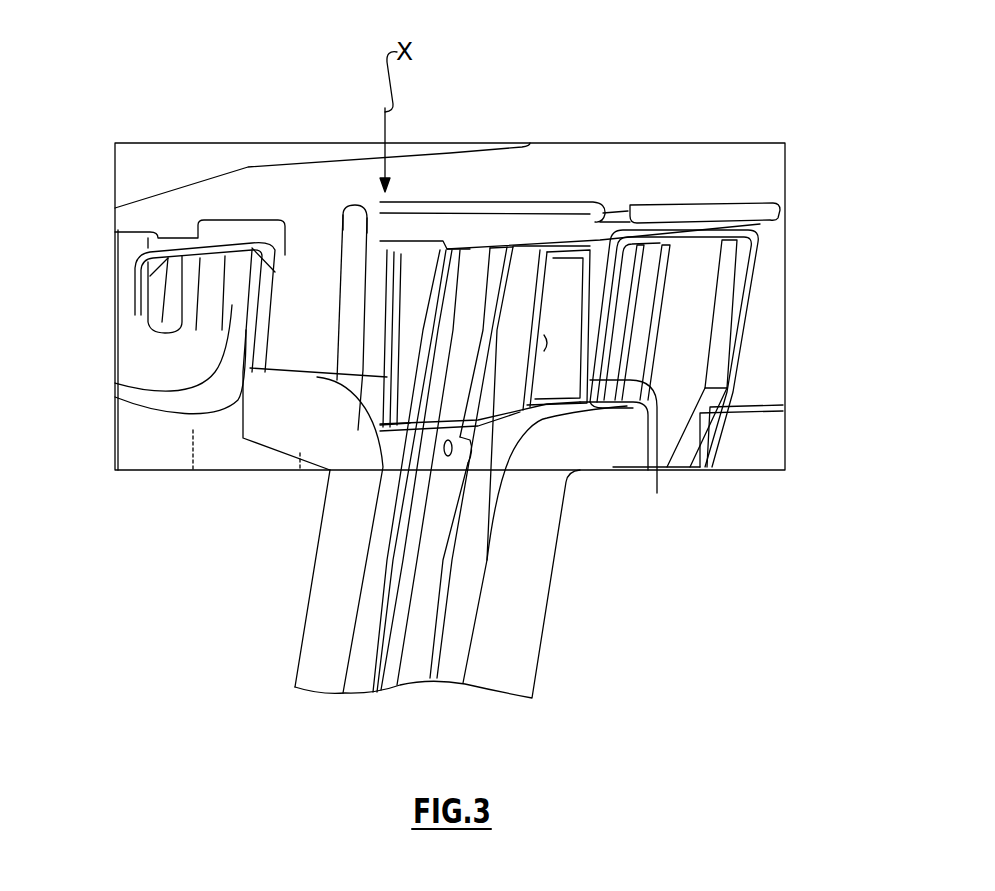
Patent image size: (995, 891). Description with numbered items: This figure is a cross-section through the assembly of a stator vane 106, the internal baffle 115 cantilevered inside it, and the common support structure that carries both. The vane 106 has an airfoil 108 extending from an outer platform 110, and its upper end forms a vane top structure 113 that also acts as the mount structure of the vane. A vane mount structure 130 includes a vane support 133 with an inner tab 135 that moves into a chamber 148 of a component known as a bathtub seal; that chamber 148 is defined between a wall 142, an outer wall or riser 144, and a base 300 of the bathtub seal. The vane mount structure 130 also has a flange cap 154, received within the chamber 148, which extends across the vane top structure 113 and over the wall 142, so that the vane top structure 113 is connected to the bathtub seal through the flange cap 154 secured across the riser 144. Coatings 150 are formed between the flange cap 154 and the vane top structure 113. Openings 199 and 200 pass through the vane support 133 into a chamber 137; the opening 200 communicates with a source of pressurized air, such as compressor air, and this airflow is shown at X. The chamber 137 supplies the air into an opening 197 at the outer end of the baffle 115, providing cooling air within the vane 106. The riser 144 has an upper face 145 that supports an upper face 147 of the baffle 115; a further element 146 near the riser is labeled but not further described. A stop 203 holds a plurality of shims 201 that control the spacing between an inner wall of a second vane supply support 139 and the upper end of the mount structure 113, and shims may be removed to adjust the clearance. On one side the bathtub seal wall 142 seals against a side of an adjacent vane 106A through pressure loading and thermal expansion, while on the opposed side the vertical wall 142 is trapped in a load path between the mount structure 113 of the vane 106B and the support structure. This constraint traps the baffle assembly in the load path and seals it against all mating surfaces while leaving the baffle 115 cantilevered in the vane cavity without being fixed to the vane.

The stator vane 106 is at (325, 430).
The adjacent vane 106A is at (608, 443).
The vane 106B is at (147, 368).
The airfoil 108 is at (340, 585).
The outer platform 110 is at (310, 425).
The vane top structure 113 is at (700, 246).
The baffle 115 is at (445, 510).
The vane mount structure 130 is at (370, 125).
The vane support 133 is at (303, 163).
The inner tab 135 is at (298, 295).
The chamber 137 is at (387, 260).
The second vane supply support 139 is at (703, 160).
The wall 142 is at (295, 295).
The riser 144 is at (450, 280).
The upper face 145 is at (385, 284).
The rail 146 is at (410, 280).
The upper face 147 is at (537, 273).
The chamber 148 is at (592, 328).
The coatings 150 is at (745, 242).
The flange cap 154 is at (618, 228).
The opening 197 is at (498, 245).
The opening 199 is at (357, 197).
The opening 200 is at (392, 170).
The shims 201 is at (772, 204).
The stop 203 is at (607, 195).
The base 300 is at (552, 392).